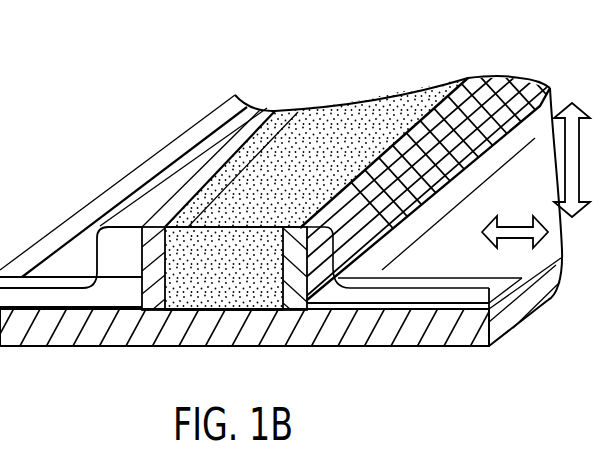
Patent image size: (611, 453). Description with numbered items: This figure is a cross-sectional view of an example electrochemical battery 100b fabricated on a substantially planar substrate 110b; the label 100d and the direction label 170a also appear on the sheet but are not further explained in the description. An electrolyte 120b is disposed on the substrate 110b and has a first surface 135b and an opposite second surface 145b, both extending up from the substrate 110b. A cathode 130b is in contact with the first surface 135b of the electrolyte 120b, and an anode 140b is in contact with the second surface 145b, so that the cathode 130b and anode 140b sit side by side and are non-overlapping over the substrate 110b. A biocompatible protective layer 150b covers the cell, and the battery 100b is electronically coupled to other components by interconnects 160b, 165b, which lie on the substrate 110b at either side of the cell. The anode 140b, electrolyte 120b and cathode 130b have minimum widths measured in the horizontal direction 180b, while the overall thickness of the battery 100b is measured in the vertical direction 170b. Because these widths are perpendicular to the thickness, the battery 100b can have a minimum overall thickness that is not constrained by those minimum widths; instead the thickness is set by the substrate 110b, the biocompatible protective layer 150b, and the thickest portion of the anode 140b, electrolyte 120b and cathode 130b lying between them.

The electrochemical battery 100b is at (291, 87).
The light emitting device (adjacent figure) 100d is at (354, 446).
The substrate 110b is at (341, 349).
The electrolyte 120b is at (222, 298).
The cathode 130b is at (152, 298).
The anode 140b is at (300, 297).
The first surface 135b is at (172, 268).
The second surface 145b is at (278, 266).
The biocompatible protective layer 150b is at (105, 226).
The interconnect 160b is at (38, 296).
The interconnect 165b is at (387, 296).
The first direction 170a is at (16, 173).
The vertical direction 170b is at (585, 112).
The horizontal direction 180b is at (513, 238).